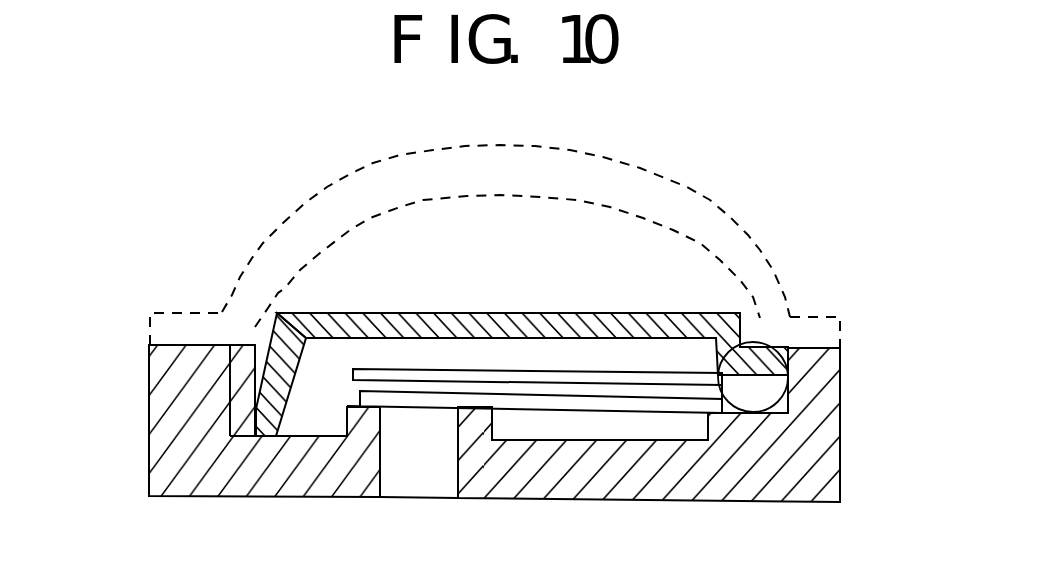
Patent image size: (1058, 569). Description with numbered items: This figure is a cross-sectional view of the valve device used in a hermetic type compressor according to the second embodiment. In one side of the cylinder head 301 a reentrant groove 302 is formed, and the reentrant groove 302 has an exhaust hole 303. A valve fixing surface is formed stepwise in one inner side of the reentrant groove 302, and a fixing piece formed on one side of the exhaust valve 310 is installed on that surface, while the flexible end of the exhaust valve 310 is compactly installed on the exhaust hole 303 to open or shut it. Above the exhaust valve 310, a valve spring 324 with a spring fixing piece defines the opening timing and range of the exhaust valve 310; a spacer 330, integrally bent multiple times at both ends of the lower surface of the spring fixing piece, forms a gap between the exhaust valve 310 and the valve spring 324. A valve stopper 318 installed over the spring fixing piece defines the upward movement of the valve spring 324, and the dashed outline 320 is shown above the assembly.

The cylinder head 301 is at (183, 391).
The reentrant groove 302 is at (277, 313).
The exhaust hole 303 is at (390, 457).
The exhaust valve 310 is at (655, 410).
The valve stopper 318 is at (612, 314).
The lens / cover 320 is at (725, 233).
The valve spring 324 is at (482, 372).
The spacer 330 is at (760, 397).